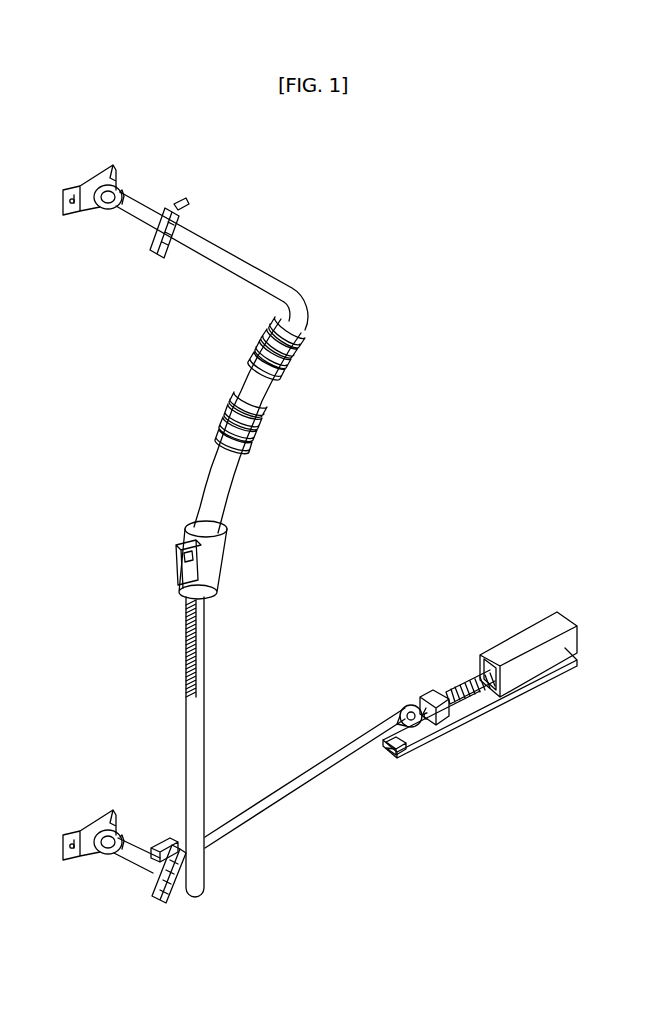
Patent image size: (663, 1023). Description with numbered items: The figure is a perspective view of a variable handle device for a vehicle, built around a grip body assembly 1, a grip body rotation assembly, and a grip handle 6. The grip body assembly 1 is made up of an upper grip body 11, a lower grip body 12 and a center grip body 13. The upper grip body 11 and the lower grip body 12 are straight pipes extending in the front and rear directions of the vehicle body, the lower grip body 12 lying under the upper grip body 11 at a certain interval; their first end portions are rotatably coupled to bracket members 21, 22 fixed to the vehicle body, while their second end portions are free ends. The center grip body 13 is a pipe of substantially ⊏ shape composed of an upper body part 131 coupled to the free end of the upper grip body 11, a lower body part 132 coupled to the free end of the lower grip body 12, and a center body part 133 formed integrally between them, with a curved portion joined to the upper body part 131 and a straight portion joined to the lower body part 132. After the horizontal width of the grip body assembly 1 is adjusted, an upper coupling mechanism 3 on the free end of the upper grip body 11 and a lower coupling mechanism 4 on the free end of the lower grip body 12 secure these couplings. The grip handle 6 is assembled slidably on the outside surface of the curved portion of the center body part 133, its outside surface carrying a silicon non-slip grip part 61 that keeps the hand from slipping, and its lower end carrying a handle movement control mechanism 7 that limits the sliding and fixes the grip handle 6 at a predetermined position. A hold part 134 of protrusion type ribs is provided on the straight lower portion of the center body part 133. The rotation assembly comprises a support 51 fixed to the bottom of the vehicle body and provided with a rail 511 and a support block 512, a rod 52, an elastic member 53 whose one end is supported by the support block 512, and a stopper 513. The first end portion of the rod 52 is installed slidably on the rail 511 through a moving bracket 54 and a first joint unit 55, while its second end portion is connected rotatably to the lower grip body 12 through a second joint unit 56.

The grip body assembly 1 is at (271, 262).
The bracket member 21 is at (105, 183).
The upper grip body 11 is at (140, 205).
The upper body part 131 is at (205, 265).
The upper coupling mechanism 3 is at (152, 246).
The grip handle 6 is at (228, 495).
The non-slip grip part 61 is at (250, 433).
The handle movement control mechanism 7 is at (182, 529).
The center grip body 13 is at (185, 712).
The hold part 134 is at (185, 640).
The center body part 133 is at (205, 640).
The bracket member 22 is at (82, 825).
The lower grip body 12 is at (118, 856).
The lower body part 132 is at (176, 897).
The second joint unit 56 is at (170, 840).
The lower coupling mechanism 4 is at (154, 898).
The rod 52 is at (265, 812).
The support 51 is at (559, 621).
The rail 511 is at (470, 735).
The stopper 513 is at (397, 760).
The support block 512 is at (513, 640).
The elastic member 53 is at (490, 697).
The moving bracket 54 is at (430, 693).
The first joint unit 55 is at (405, 716).